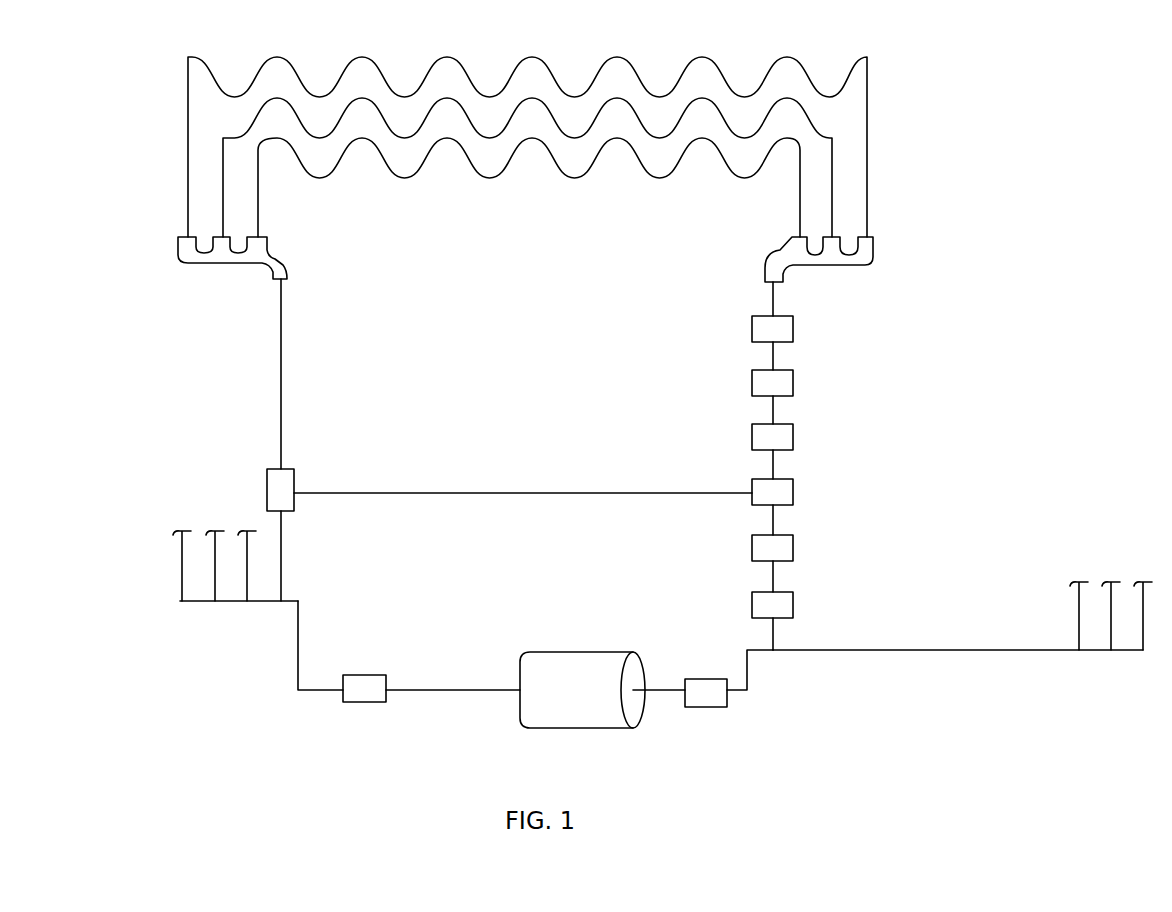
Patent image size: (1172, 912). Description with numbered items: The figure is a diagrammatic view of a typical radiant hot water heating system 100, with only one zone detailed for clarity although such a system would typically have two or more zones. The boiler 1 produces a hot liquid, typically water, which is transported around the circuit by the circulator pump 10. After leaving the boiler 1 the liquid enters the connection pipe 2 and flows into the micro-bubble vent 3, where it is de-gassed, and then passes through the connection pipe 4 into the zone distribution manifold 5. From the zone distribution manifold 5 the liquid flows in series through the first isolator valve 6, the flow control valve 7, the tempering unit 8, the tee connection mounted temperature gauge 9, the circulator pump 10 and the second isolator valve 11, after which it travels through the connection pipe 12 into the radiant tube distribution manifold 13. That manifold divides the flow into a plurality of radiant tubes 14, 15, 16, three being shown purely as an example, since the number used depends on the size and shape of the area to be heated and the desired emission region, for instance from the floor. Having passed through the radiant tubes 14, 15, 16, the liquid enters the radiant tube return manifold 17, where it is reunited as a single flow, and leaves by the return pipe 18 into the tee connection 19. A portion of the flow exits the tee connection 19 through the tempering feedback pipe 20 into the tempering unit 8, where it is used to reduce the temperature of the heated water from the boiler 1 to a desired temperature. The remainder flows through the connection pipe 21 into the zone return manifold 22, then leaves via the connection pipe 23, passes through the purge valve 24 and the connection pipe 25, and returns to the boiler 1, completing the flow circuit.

The radiant hot water heating system 100 is at (1062, 155).
The boiler 1 is at (532, 713).
The connection pipe 2 is at (672, 690).
The micro-bubble vent 3 is at (707, 707).
The connection pipe 4 is at (748, 668).
The zone distribution manifold 5 is at (895, 650).
The first isolator valve 6 is at (752, 603).
The flow control valve 7 is at (752, 548).
The tempering unit 8 is at (752, 502).
The tee connection mounted temperature gauge 9 is at (752, 438).
The circulator pump 10 is at (752, 385).
The second isolator valve 11 is at (752, 330).
The connection pipe 12 is at (770, 304).
The radiant tube distribution manifold 13 is at (873, 248).
The radiant tube 14 is at (868, 114).
The radiant tube 15 is at (777, 100).
The radiant tube 16 is at (690, 140).
The radiant tube return manifold 17 is at (243, 265).
The return pipe 18 is at (281, 390).
The tee connection 19 is at (267, 487).
The tempering feedback pipe 20 is at (483, 492).
The connection pipe 21 is at (281, 545).
The zone return manifold 22 is at (268, 602).
The connection pipe 23 is at (297, 667).
The purge valve 24 is at (367, 703).
The connection pipe 25 is at (477, 690).